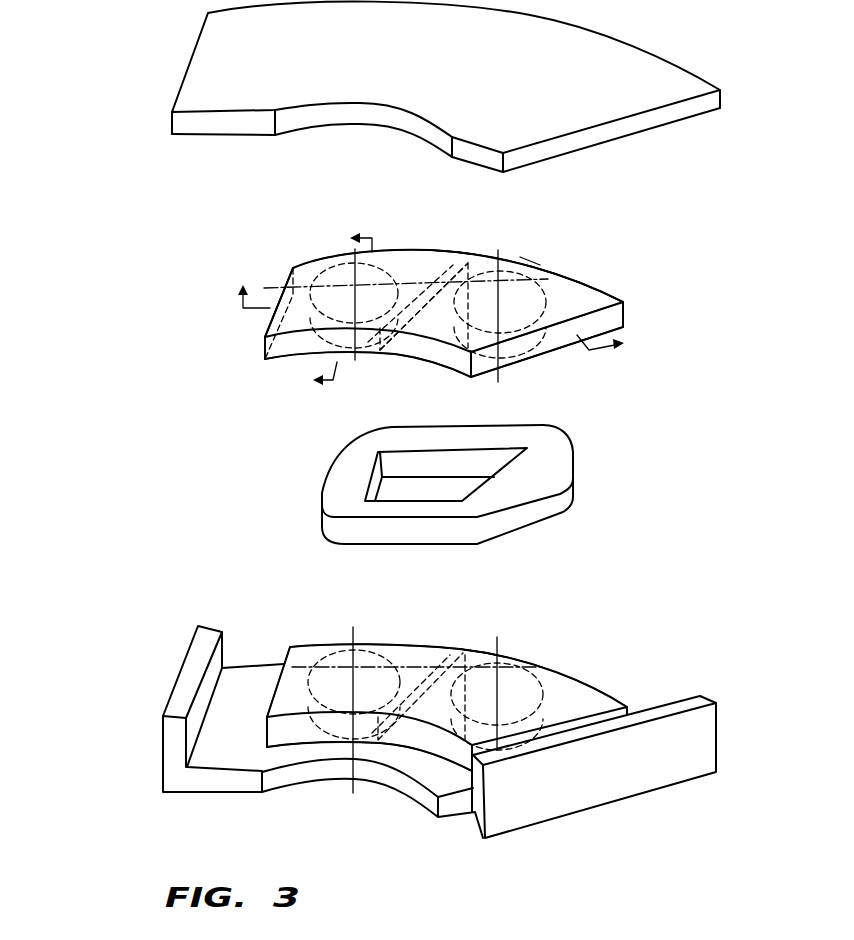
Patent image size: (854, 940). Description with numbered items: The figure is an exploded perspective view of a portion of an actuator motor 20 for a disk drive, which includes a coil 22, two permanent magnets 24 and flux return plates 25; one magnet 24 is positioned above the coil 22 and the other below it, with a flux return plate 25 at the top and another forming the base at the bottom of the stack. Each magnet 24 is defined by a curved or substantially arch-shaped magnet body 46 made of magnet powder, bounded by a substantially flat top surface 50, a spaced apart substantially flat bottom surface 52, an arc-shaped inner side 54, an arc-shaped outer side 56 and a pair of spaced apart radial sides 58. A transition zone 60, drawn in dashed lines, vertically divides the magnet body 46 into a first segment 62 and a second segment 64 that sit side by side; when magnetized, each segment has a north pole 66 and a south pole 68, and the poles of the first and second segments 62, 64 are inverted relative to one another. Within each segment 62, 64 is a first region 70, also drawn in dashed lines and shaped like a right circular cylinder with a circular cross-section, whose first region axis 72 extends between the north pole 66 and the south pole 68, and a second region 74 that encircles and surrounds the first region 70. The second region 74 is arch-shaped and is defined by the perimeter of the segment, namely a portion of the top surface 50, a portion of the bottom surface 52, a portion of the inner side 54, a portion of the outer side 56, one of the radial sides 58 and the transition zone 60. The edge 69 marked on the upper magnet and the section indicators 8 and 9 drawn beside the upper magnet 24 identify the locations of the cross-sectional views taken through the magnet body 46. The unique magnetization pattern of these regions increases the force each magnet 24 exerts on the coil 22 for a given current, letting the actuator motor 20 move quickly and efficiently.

The actuator motor 20 is at (83, 2).
The coil 22 is at (557, 450).
The permanent magnet 24 is at (602, 292).
The flux return plate 25 is at (670, 77).
The magnet body 46 is at (625, 323).
The top surface 50 is at (540, 263).
The bottom surface 52 is at (555, 353).
The inner side 54 is at (460, 382).
The outer side 56 is at (403, 250).
The radial sides 58 is at (267, 348).
The transition zone 60 is at (458, 263).
The first segment 62 is at (291, 279).
The second segment 64 is at (563, 684).
The north pole 66 is at (313, 270).
The south pole 68 is at (268, 367).
The end edge 69 is at (620, 303).
The first region 70 is at (380, 268).
The first region axis 72 is at (360, 364).
The second region 74 is at (293, 315).
The section line 8- 8 is at (331, 308).
The section line 9- 9 is at (442, 307).